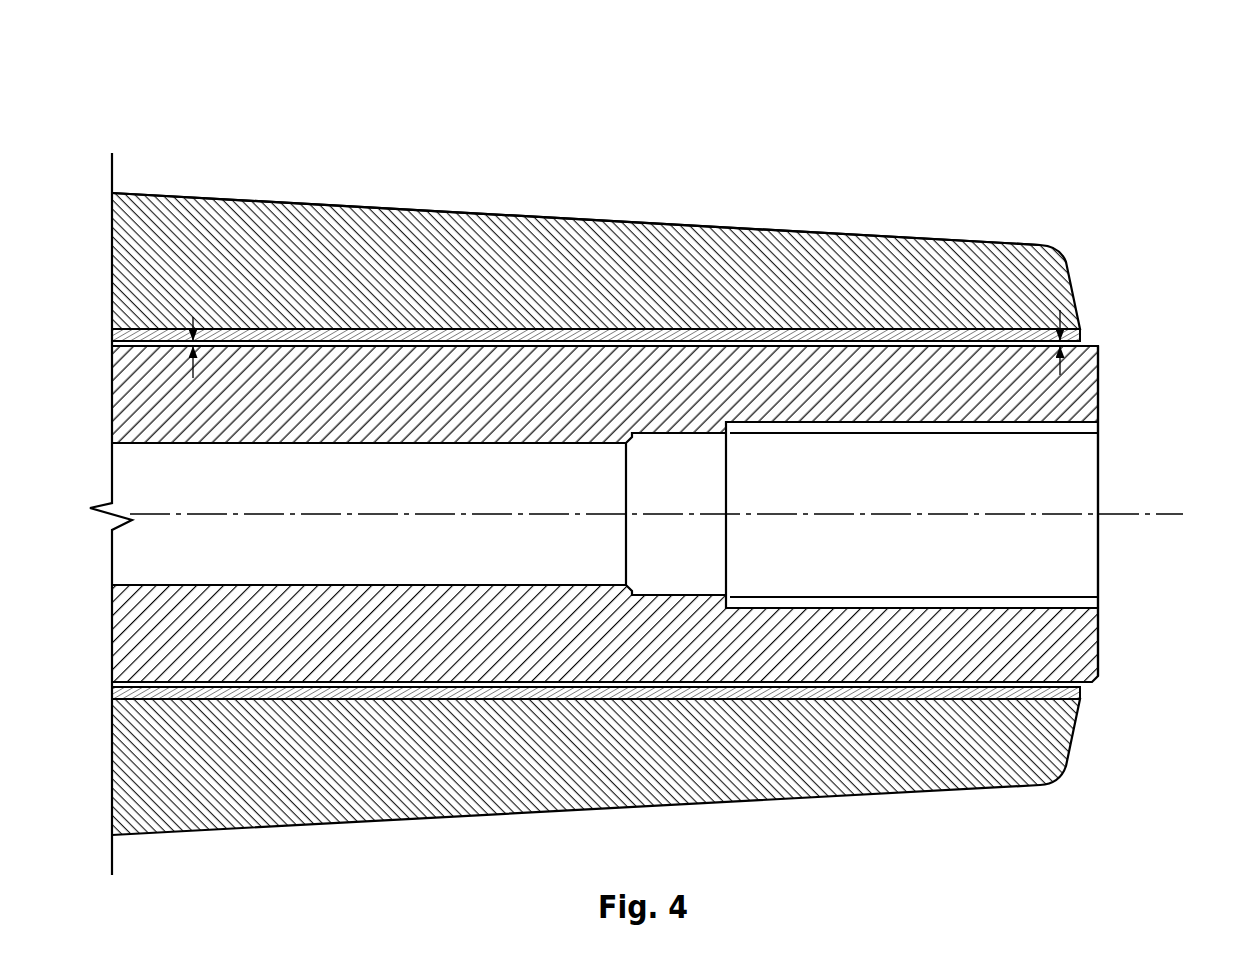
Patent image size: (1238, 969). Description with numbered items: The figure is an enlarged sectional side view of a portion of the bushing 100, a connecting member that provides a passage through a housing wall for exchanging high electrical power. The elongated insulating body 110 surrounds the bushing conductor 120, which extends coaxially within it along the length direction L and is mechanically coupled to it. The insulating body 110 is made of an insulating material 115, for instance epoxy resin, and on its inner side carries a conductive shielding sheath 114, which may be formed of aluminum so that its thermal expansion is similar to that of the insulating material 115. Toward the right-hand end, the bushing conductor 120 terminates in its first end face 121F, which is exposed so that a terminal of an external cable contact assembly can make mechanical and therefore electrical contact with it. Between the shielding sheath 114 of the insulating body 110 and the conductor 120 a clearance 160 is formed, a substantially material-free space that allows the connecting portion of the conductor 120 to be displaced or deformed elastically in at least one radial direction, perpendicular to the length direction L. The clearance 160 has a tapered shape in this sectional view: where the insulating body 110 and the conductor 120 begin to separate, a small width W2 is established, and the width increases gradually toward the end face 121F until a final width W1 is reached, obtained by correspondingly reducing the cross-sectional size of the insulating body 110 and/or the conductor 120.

The bushing 100 is at (653, 446).
The insulating body 110 is at (597, 505).
The shielding sheath 114 is at (895, 333).
The insulating material 115 is at (853, 233).
The bushing conductor 120 is at (664, 515).
The first end face 121F is at (1099, 377).
The clearance 160 is at (1083, 345).
The final width W1 is at (1060, 317).
The small width W2 is at (193, 323).
The length direction L is at (570, 513).